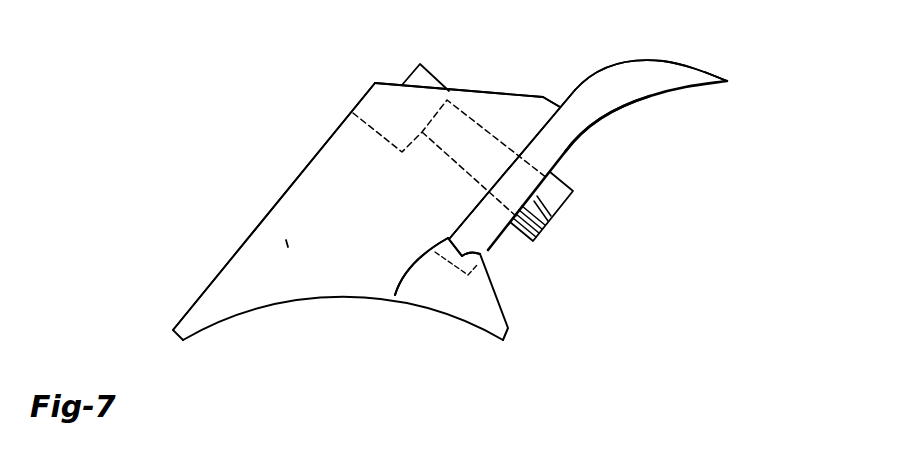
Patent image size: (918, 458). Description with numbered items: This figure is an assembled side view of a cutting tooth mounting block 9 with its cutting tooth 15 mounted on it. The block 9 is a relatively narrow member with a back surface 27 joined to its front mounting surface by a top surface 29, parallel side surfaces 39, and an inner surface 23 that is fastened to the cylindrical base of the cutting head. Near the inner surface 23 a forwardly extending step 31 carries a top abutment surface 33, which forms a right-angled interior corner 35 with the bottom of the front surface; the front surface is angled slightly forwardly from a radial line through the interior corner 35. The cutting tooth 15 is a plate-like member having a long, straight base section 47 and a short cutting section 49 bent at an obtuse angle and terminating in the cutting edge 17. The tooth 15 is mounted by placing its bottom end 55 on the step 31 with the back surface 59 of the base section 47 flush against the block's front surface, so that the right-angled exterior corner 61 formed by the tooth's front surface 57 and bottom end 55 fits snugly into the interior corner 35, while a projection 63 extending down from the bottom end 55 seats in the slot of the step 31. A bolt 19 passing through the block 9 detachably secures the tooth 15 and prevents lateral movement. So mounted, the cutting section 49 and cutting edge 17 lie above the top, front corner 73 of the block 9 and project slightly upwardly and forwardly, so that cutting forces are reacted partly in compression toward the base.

The cutting tooth mounting block 9 is at (297, 163).
The cutting tooth 15 is at (602, 170).
The cutting edge 17 is at (727, 81).
The bolt 19 is at (418, 78).
The inner surface 23 is at (263, 308).
The back surface 27 is at (253, 228).
The top surface 29 is at (460, 92).
The step 31 is at (513, 313).
The abutment surface 33 is at (513, 247).
The interior corner 35 is at (395, 295).
The side surfaces 39 is at (287, 243).
The base section 47 is at (480, 254).
The cutting section 49 is at (657, 58).
The bottom end 55 is at (458, 250).
The front surface 57 is at (580, 136).
The back surface 59 is at (533, 135).
The exterior corner 61 is at (450, 243).
The projection 63 is at (712, 72).
The top, front corner 73 is at (560, 107).